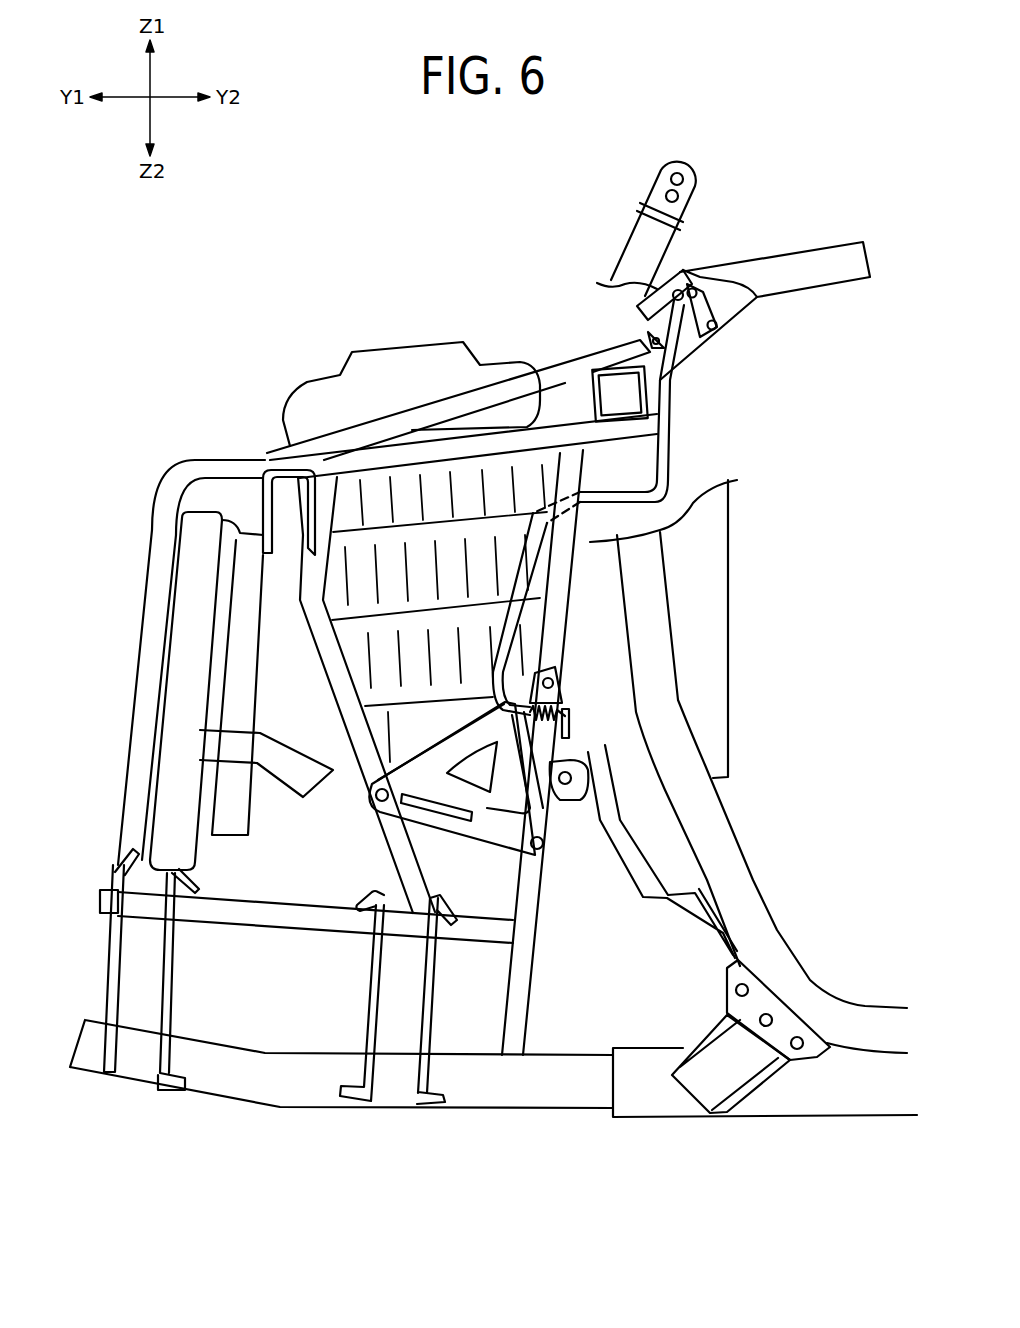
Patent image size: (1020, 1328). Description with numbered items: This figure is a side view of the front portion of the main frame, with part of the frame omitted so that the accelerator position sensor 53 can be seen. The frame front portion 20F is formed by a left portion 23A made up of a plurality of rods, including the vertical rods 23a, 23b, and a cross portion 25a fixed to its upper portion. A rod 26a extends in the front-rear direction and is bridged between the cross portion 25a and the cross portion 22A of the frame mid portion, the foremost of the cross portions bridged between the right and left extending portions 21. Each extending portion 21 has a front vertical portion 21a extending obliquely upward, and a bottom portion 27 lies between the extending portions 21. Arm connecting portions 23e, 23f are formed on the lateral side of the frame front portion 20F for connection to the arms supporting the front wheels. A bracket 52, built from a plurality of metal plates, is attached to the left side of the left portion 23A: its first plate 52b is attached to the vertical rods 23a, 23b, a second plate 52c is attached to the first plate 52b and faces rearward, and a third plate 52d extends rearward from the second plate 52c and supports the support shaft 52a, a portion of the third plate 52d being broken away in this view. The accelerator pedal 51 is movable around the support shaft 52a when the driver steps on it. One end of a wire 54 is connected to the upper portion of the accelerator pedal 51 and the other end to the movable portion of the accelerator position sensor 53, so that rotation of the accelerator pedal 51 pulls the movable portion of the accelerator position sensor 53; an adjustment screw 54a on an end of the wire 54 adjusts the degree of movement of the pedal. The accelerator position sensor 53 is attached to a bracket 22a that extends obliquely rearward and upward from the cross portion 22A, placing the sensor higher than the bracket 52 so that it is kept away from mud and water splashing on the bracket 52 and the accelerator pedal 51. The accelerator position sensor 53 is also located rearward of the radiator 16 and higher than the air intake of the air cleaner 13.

The air cleaner 13 is at (330, 374).
The rod 26a is at (490, 384).
The cross portion 22A is at (616, 366).
The bracket 22a is at (740, 318).
The accelerator position sensor 53 is at (686, 346).
The wire 54 is at (672, 440).
The cross portion 25a is at (272, 464).
The left portion 23A is at (150, 530).
The radiator 16 is at (182, 600).
The vertical rod 23a is at (345, 700).
The vertical rod 23b is at (530, 904).
The bracket 52 is at (492, 791).
The support shaft 52a is at (563, 795).
The first plate 52b is at (446, 757).
The second plate 52c is at (467, 818).
The third plate 52d is at (524, 758).
The adjustment screw 54a is at (556, 692).
The accelerator pedal 51 is at (642, 892).
The front vertical portion 21a is at (698, 746).
The extending portion 21 is at (806, 970).
The bottom portion 27 is at (846, 1100).
The arm connecting portion 23e is at (110, 975).
The arm connecting portion 23f is at (366, 1012).
The frame front portion 20F is at (388, 1136).